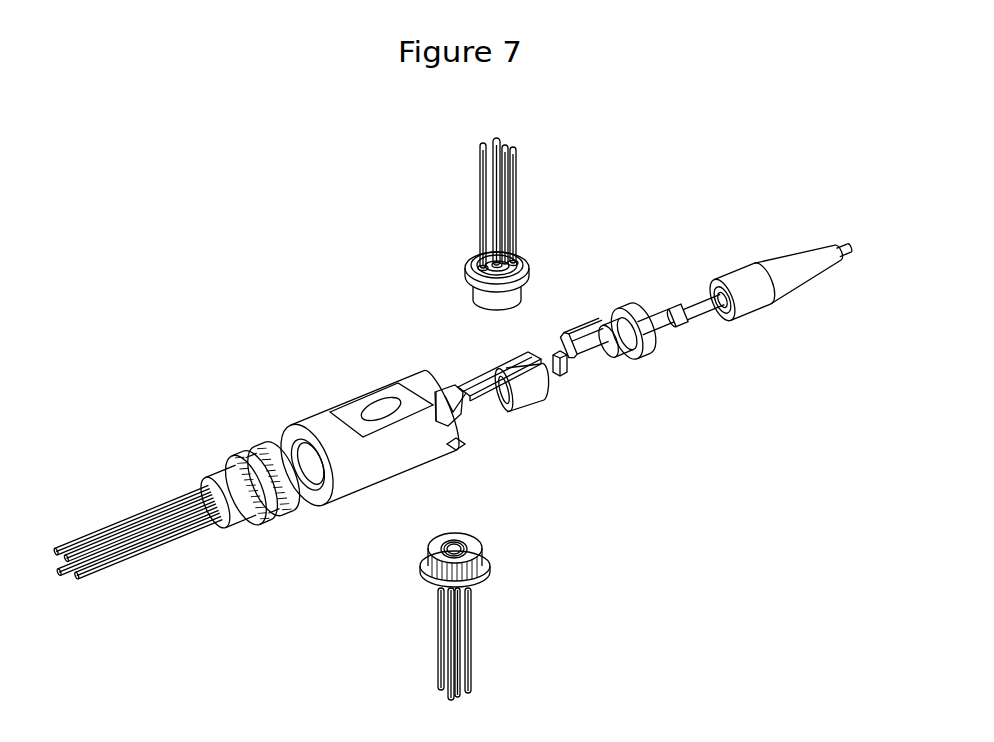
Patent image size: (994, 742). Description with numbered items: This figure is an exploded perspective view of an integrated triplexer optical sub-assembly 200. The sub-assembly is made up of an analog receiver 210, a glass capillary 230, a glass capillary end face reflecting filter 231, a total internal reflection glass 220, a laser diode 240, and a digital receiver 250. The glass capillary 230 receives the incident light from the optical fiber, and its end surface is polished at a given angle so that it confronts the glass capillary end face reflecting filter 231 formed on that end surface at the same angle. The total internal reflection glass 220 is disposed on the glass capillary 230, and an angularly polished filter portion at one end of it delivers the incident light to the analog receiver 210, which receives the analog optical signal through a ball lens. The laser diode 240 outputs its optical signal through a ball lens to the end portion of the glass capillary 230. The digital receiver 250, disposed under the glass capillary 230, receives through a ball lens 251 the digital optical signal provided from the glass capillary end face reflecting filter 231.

The integrated triplexer optical sub-assembly 200 is at (687, 147).
The analog receiver 210 is at (533, 258).
The total internal reflection glass 220 is at (590, 324).
The glass capillary 230 is at (596, 364).
The glass capillary end face reflecting filter 231 is at (557, 378).
The laser diode 240 is at (232, 457).
The digital receiver 250 is at (482, 556).
The ball lens 251 is at (460, 531).